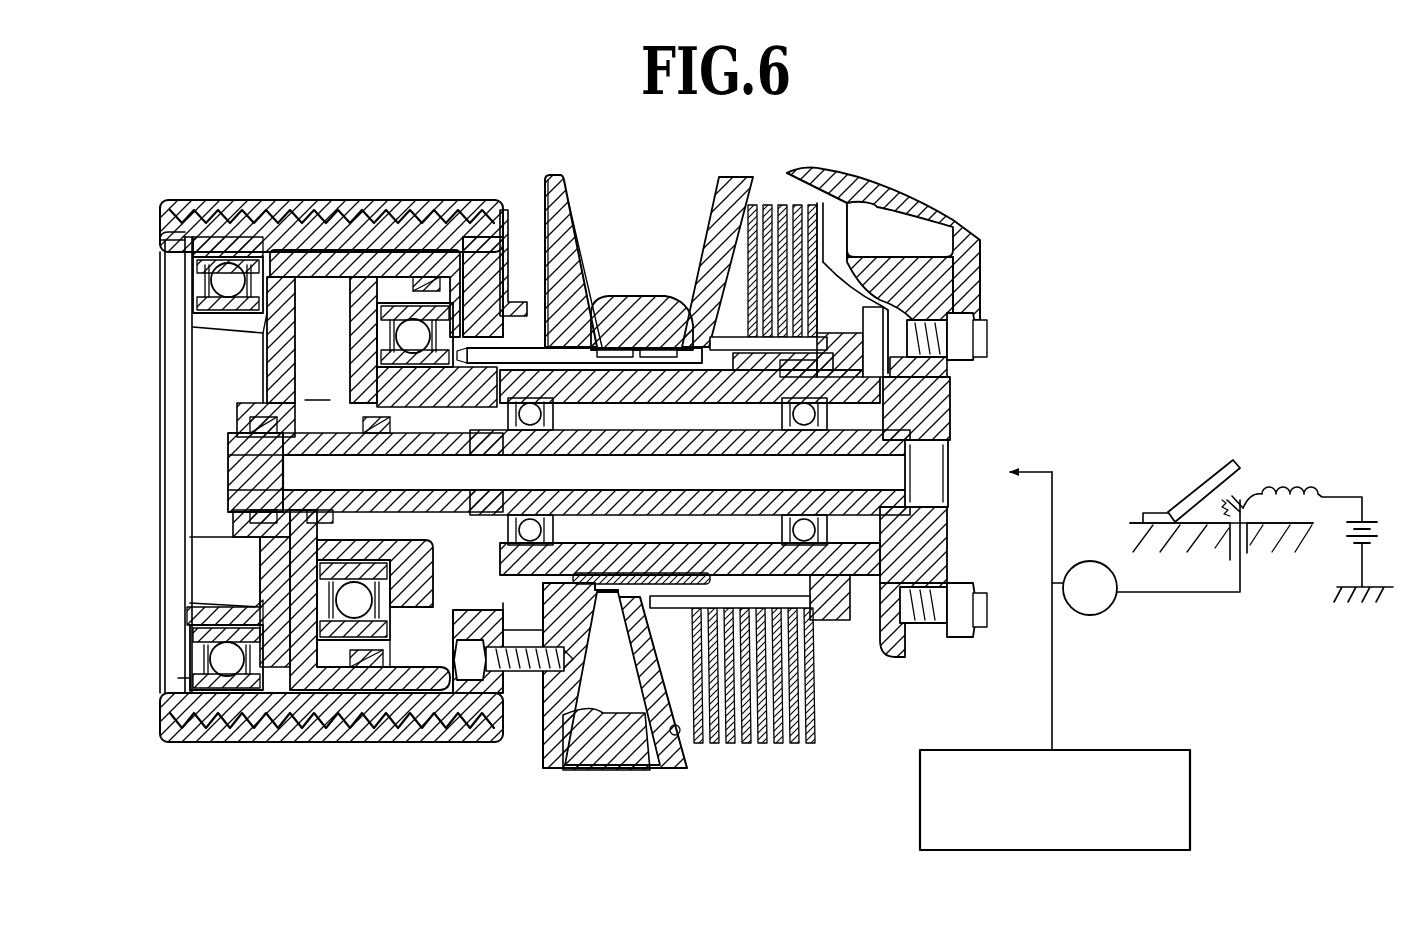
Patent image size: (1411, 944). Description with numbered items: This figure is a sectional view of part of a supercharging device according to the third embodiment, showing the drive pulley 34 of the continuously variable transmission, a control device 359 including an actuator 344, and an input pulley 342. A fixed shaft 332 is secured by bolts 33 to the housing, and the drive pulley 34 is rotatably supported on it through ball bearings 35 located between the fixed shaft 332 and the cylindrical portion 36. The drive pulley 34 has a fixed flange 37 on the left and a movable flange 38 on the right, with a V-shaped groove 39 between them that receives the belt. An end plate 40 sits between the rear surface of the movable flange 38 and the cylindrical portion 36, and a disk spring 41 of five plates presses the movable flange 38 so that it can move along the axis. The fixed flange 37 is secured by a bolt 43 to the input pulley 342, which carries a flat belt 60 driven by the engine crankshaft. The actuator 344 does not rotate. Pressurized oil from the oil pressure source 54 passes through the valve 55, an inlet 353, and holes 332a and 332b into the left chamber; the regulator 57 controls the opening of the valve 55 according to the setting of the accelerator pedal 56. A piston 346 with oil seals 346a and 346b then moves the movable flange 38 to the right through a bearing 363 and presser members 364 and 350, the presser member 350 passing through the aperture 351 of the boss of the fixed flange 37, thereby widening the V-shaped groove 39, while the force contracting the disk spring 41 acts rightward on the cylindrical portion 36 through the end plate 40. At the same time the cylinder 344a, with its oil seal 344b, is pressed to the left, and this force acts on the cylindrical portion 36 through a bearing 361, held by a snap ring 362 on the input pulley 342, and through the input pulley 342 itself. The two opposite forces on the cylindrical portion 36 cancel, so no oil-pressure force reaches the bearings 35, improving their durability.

The bolts 33 is at (905, 655).
The drive pulley 34 is at (520, 775).
The ball bearings 35 is at (590, 350).
The cylindrical portion 36 is at (662, 385).
The fixed flange 37 is at (573, 250).
The movable flange 38 is at (707, 240).
The V-shaped groove 39 is at (565, 193).
The end plate 40 is at (810, 690).
The disk spring 41 is at (780, 735).
The bolt 43 is at (468, 695).
The oil pressure source 54 is at (1190, 803).
The valve 55 is at (1102, 615).
The accelerator pedal 56 is at (1200, 490).
The regulator 57 is at (1287, 492).
The flat belt 60 is at (222, 742).
The fixed shaft 332 is at (882, 450).
The hole 332a is at (827, 480).
The hole 332b is at (280, 497).
The input pulley 342 is at (340, 700).
The actuator 344 is at (223, 357).
The cylinder 344a is at (318, 262).
The oil seal 344b is at (262, 425).
The piston 346 is at (345, 338).
The oil seal 346a is at (422, 290).
The oil seal 346b is at (392, 440).
The presser member 350 is at (497, 355).
The plate 351 is at (528, 300).
The inlet 353 is at (950, 440).
The control device 359 is at (1212, 618).
The bearing 361 is at (212, 300).
The snap ring 362 is at (172, 238).
The bearing 363 is at (380, 320).
The presser member 364 is at (430, 560).